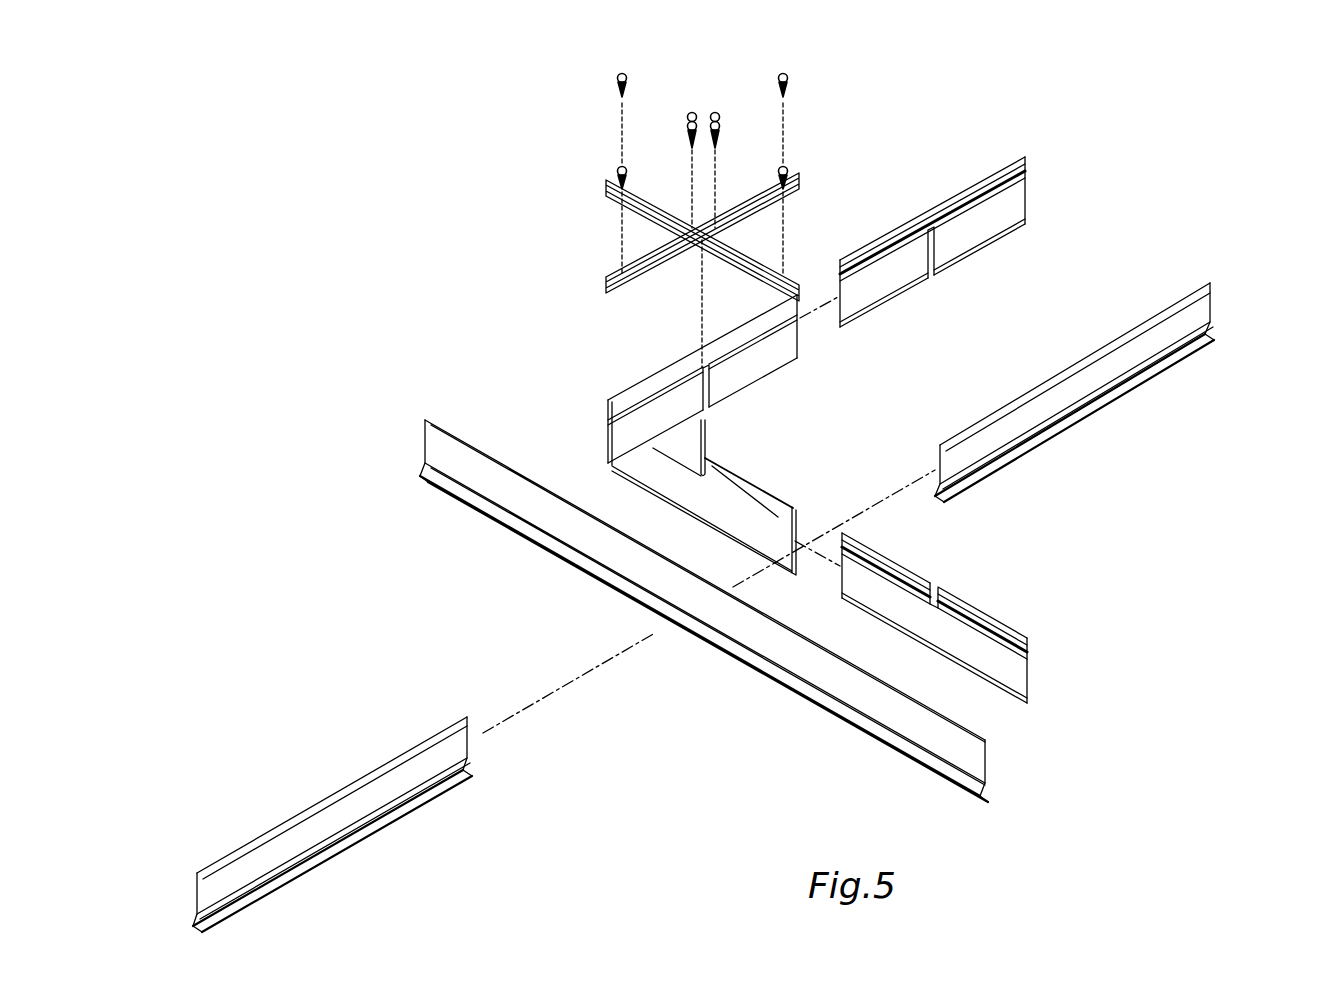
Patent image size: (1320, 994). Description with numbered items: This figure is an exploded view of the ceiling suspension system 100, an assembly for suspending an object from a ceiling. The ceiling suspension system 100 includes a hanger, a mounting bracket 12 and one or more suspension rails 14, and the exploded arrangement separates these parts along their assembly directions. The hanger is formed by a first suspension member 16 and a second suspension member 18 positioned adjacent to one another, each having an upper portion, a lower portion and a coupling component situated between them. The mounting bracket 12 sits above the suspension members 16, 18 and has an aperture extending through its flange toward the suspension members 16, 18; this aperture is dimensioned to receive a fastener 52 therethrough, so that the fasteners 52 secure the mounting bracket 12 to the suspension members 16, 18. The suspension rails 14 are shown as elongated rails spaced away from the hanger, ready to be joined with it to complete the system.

The ceiling suspension system 100 is at (325, 95).
The mounting bracket 12 is at (797, 177).
The suspension rail 14 is at (1214, 304).
The first suspension member 16 is at (1016, 200).
The second suspension member 18 is at (626, 436).
The fastener 52 is at (612, 78).